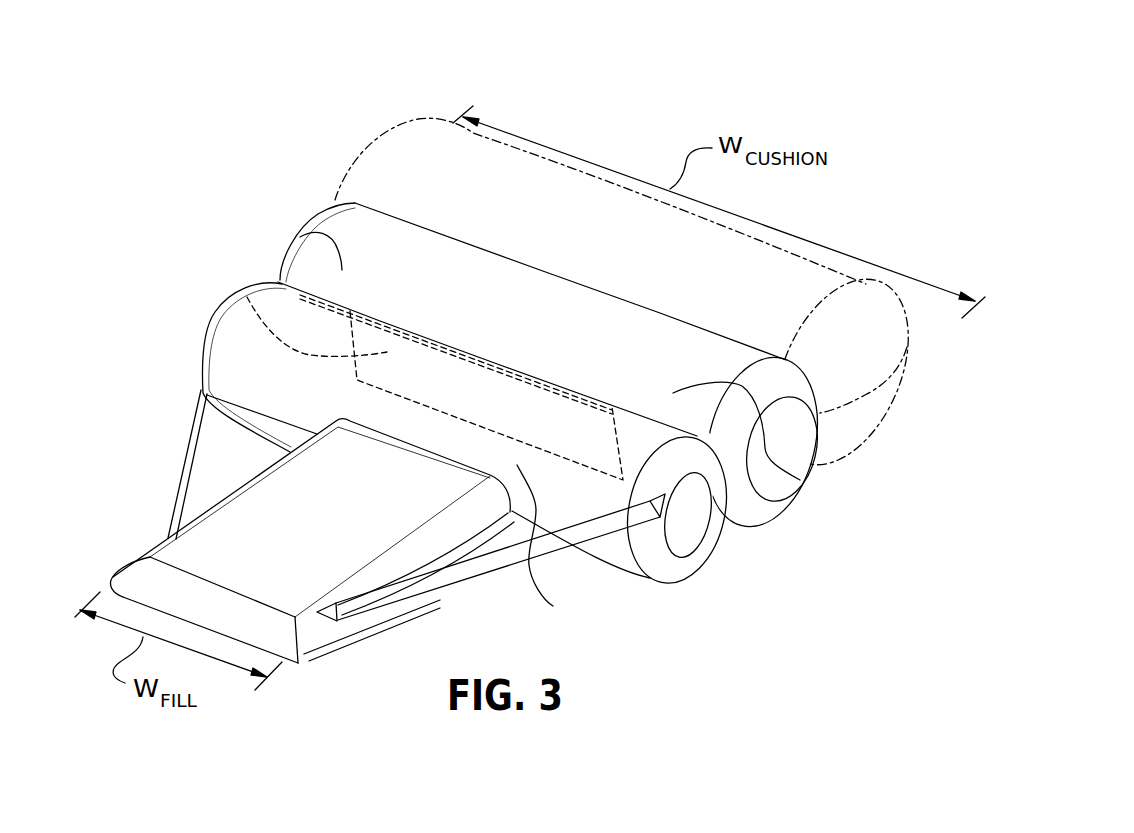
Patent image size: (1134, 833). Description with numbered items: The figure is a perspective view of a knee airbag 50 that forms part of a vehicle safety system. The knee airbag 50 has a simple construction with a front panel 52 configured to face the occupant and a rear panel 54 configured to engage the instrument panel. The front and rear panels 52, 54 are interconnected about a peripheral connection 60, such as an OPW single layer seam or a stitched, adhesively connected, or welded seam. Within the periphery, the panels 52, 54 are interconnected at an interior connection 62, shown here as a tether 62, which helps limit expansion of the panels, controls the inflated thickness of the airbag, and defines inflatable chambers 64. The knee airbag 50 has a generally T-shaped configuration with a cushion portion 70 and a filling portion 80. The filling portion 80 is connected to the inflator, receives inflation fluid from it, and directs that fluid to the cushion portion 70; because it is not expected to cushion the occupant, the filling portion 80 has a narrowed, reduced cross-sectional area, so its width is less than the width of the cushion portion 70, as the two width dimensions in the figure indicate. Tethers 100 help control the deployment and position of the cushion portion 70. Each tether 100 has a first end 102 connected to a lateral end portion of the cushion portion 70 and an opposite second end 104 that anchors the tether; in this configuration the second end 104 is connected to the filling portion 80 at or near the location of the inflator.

The knee airbag 50 is at (342, 112).
The front panel 52 is at (773, 510).
The rear panel 54 is at (300, 237).
The peripheral connection 60 is at (700, 550).
The interior connection 62 is at (230, 297).
The inflatable chamber 64 is at (800, 480).
The cushion portion 70 is at (220, 173).
The filling portion 80 is at (160, 465).
The tether 100 is at (197, 403).
The first end 102 is at (640, 517).
The second end 104 is at (333, 621).